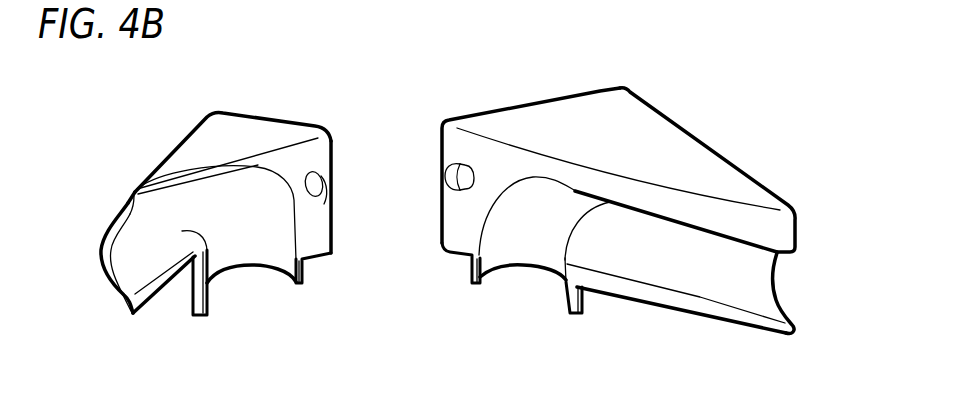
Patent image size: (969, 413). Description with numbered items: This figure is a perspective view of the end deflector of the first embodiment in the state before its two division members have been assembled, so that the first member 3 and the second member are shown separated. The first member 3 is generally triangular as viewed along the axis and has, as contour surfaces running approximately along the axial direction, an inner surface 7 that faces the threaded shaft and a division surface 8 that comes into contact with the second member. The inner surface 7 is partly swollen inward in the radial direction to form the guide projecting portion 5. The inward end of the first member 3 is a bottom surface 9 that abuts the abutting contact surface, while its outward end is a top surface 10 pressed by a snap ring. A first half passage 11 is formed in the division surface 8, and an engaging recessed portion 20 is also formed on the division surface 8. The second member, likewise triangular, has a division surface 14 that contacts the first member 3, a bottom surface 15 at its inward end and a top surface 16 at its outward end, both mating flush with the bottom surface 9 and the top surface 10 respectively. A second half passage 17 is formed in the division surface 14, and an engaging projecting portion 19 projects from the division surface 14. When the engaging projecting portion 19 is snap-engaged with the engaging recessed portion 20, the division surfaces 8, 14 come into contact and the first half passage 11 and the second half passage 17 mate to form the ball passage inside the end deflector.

The first member 3 is at (149, 150).
The guide projecting portion 5 is at (100, 249).
The inner surface 7 is at (127, 203).
The division surface 8 is at (318, 158).
The bottom surface 9 is at (317, 253).
The top surface 10 is at (255, 137).
The first half passage 11 is at (140, 267).
The division surface 14 is at (498, 160).
The bottom surface 15 is at (652, 306).
The top surface 16 is at (662, 150).
The second half passage 17 is at (713, 270).
The engaging projecting portion 19 is at (446, 176).
The engaging recessed portion 20 is at (323, 198).